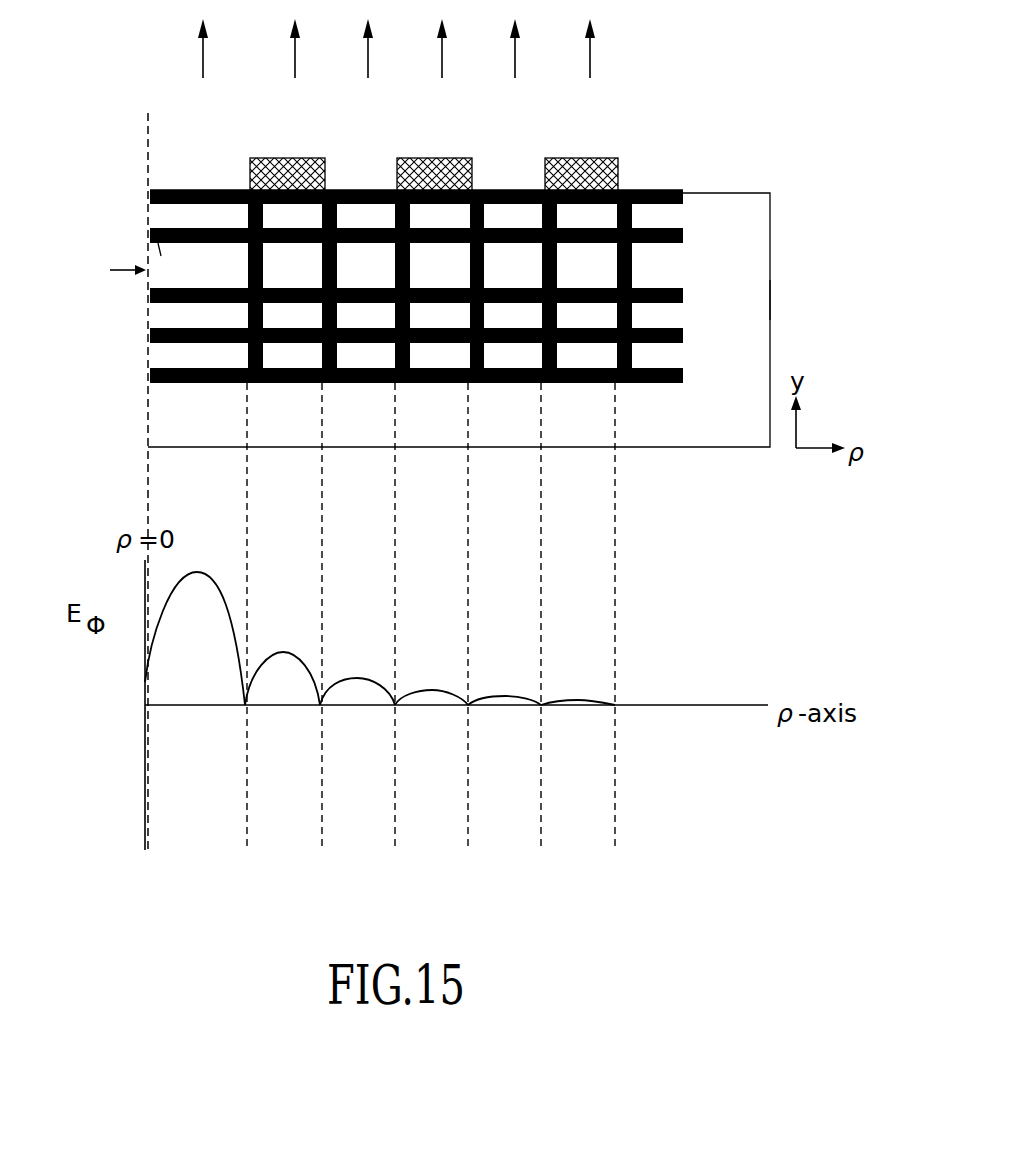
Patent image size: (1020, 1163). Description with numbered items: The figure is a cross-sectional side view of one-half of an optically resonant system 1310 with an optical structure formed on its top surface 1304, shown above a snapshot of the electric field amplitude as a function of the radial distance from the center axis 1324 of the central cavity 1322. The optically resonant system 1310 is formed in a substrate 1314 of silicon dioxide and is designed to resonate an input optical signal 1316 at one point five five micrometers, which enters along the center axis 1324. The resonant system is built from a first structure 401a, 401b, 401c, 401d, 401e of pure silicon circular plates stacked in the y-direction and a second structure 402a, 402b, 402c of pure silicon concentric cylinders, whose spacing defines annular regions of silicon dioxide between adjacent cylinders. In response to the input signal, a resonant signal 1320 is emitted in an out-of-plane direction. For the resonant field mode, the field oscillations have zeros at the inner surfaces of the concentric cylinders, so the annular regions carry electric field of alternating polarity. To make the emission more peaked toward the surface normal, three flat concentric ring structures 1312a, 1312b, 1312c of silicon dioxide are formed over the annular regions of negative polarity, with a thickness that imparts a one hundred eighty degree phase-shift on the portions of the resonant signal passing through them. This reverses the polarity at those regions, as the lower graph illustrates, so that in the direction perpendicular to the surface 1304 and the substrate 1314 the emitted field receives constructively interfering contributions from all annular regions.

The resonant signal 1320 is at (592, 50).
The center axis 1324 is at (148, 130).
The central cavity 1322 is at (158, 228).
The input optical signal 1316 is at (90, 327).
The surface 1304 is at (660, 192).
The optically resonant system 1310 is at (778, 269).
The substrate 1314 is at (760, 302).
The flat concentric ring structure 1312a is at (286, 158).
The flat concentric ring structure 1312b is at (434, 158).
The flat concentric ring structure 1312c is at (581, 158).
The first structure 401a is at (683, 376).
The first structure 401b is at (683, 336).
The first structure 401c is at (683, 296).
The first structure 401d is at (683, 236).
The first structure 401e is at (683, 197).
The second structure 402a is at (405, 385).
The second structure 402b is at (332, 385).
The second structure 402c is at (258, 385).